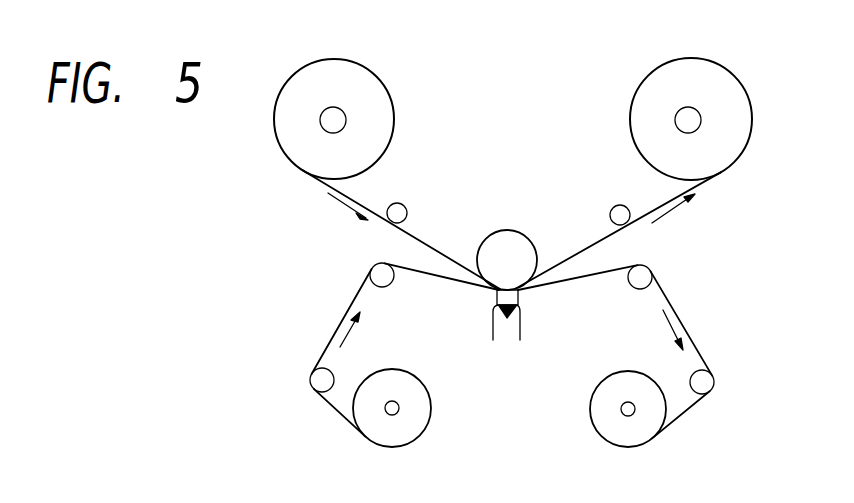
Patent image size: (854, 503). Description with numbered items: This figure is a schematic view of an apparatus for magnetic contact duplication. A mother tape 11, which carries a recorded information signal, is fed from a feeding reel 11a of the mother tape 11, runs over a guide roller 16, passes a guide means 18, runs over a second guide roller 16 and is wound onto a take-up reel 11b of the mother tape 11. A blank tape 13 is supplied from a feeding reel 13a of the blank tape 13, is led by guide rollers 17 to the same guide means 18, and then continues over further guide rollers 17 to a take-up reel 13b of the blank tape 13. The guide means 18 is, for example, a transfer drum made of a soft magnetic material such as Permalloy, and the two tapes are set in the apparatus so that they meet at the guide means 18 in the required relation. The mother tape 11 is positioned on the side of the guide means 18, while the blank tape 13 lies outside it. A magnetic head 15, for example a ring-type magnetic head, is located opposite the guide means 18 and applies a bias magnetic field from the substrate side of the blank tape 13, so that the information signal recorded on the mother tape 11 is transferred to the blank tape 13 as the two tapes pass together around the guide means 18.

The mother tape 11 is at (583, 251).
The feeding reel of the mother tape 11a is at (383, 105).
The take-up reel of the mother tape 11b is at (642, 102).
The blank tape 13 is at (440, 276).
The feeding reel of the blank tape 13a is at (426, 414).
The take-up reel of the blank tape 13b is at (594, 410).
The magnetic head 15 is at (490, 323).
The guide roller 16 is at (402, 203).
The guide roller 17 is at (382, 285).
The guide means 18 is at (497, 242).